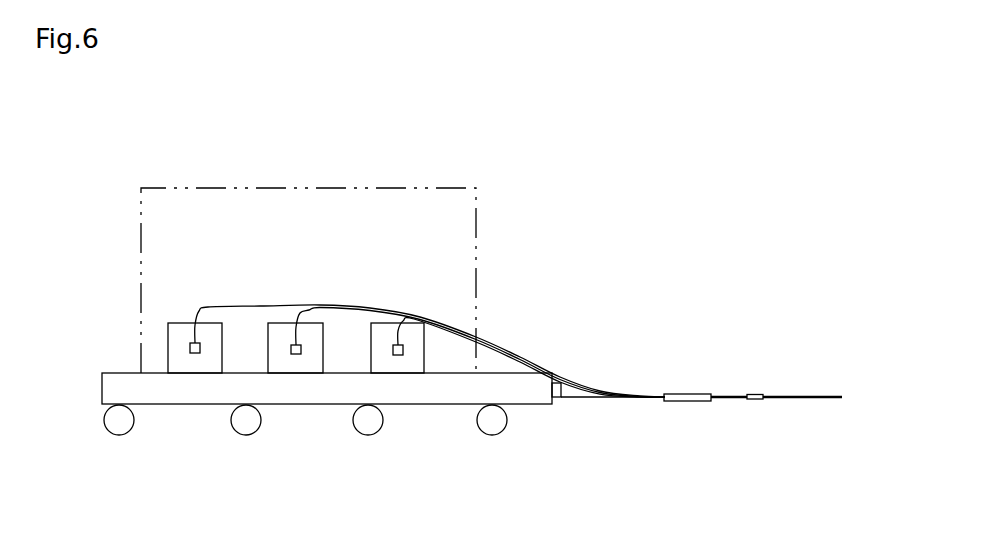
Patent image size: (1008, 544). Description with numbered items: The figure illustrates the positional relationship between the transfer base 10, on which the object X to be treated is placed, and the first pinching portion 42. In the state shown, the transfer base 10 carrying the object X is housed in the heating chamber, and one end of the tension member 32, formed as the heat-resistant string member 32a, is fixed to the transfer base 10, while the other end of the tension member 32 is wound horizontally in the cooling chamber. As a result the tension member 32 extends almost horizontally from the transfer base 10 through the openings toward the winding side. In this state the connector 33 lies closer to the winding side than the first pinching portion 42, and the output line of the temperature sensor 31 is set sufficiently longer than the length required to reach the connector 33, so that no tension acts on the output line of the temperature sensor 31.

The object X is at (477, 236).
The transfer base 10 is at (412, 394).
The temperature sensor 31 is at (515, 345).
The tension member 32 is at (738, 405).
The heat-resistant string member 32a is at (593, 399).
The first pinching portion 42 is at (683, 401).
The connector 33 is at (751, 394).